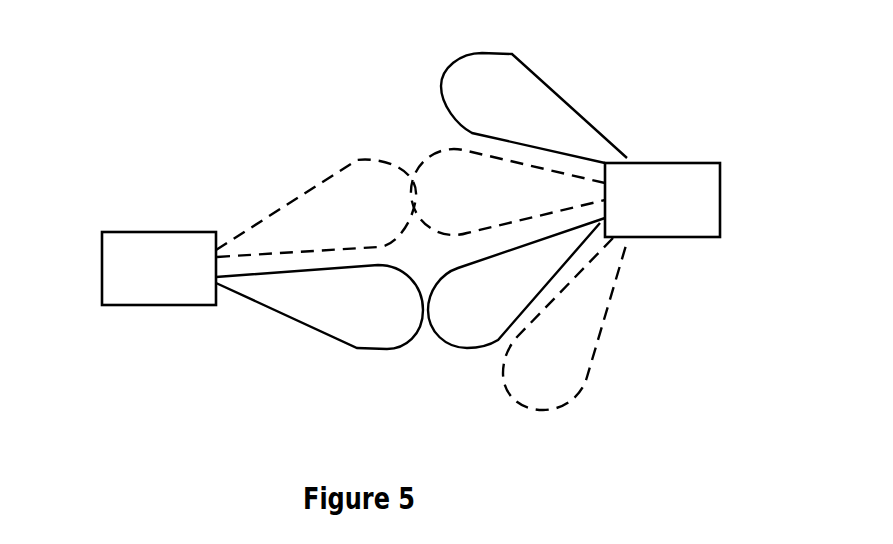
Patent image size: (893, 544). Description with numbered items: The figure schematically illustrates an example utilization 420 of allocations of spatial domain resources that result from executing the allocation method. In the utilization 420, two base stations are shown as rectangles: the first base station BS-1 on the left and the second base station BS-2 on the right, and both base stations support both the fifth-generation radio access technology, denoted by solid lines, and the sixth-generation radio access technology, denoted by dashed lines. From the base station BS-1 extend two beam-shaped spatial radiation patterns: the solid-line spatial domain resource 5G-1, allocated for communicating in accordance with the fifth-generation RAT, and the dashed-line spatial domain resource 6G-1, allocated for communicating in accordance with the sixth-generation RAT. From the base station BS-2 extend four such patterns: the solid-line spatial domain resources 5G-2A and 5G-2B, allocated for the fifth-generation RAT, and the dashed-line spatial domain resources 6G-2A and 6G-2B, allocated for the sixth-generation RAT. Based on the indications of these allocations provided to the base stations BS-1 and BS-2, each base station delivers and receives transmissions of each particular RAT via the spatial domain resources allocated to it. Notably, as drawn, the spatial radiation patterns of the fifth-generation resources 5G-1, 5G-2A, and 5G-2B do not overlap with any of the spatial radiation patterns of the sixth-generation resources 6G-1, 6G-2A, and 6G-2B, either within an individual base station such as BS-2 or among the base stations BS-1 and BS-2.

The utilization 420 is at (257, 56).
The Base Station 1 BS-1 is at (159, 268).
The Base Station 2 BS-2 is at (662, 200).
The spatial domain resource 5G-1 is at (319, 307).
The spatial domain resource 6G-1 is at (316, 208).
The spatial domain resource 5G-2A is at (534, 108).
The spatial domain resource 6G-2A is at (508, 192).
The spatial domain resource 5G-2B is at (516, 283).
The spatial domain resource 6G-2B is at (565, 324).